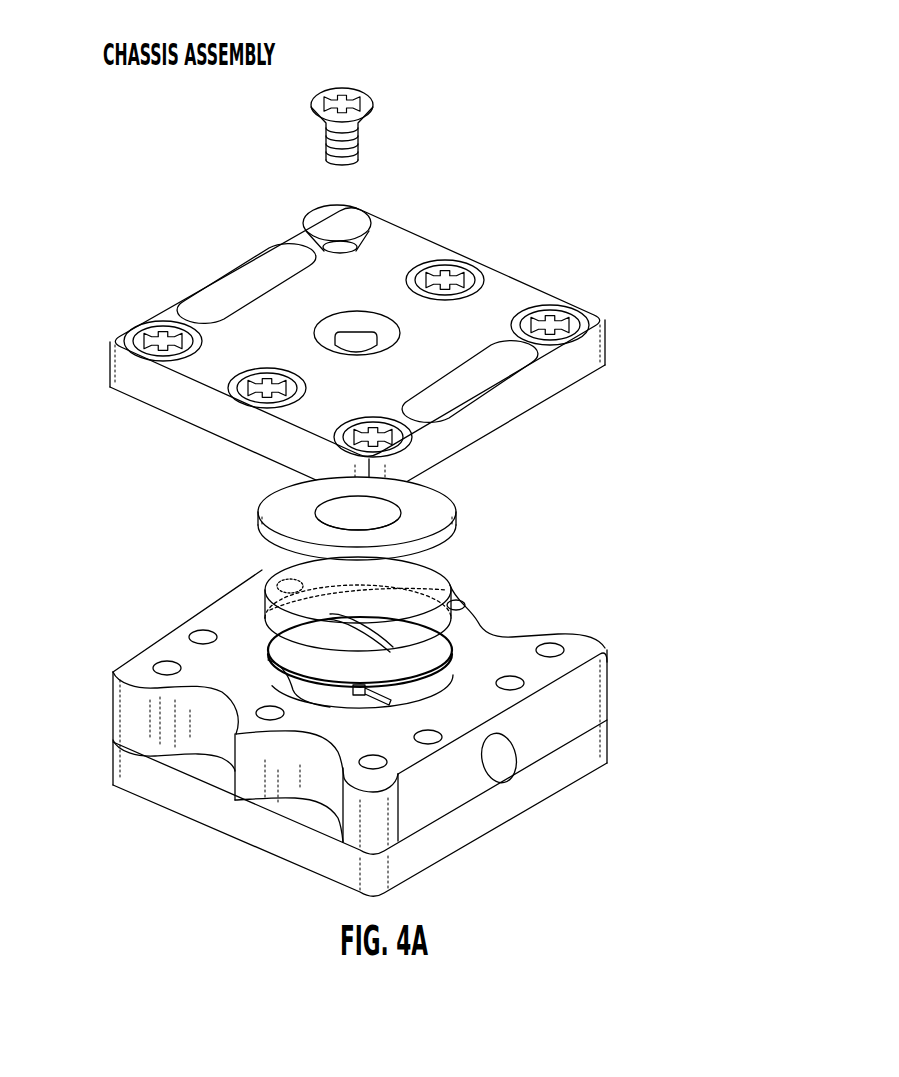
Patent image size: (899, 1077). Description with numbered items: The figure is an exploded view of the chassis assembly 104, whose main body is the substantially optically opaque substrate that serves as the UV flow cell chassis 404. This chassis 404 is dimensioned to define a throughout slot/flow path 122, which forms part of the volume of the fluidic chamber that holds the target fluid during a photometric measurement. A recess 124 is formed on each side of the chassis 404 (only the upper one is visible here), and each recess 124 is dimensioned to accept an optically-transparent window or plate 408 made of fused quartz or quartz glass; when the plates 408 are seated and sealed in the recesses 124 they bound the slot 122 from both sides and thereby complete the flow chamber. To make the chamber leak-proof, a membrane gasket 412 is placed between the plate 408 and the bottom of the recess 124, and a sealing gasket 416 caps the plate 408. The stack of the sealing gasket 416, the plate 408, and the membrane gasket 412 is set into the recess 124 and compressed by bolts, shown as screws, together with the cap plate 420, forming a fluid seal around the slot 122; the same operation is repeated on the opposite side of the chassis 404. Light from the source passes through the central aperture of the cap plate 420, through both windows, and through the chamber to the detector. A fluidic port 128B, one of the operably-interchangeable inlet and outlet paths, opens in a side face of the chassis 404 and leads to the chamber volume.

The chassis assembly 104 is at (477, 183).
The cap plate 420 is at (708, 800).
The sealing gasket 416 is at (470, 503).
The optically-transparent window or plate 408 is at (468, 570).
The UV flow cell chassis 404 is at (597, 635).
The membrane gasket 412 is at (427, 678).
The fluidic outlet 128B is at (500, 762).
The recess 124 is at (331, 698).
The throughout slot/flow path 122 is at (384, 718).